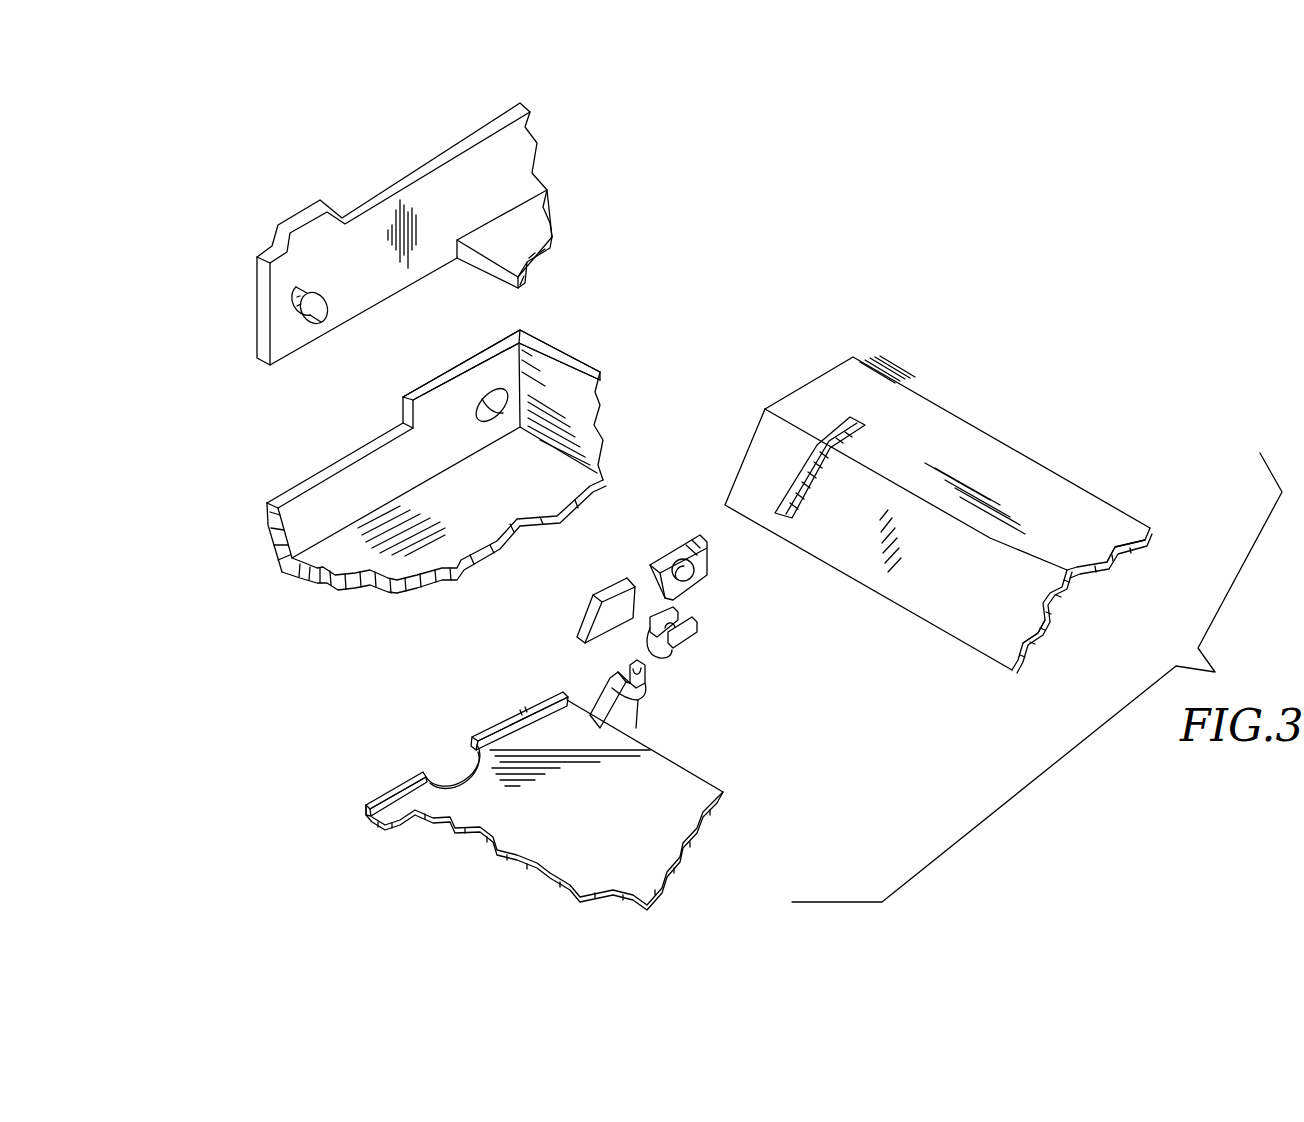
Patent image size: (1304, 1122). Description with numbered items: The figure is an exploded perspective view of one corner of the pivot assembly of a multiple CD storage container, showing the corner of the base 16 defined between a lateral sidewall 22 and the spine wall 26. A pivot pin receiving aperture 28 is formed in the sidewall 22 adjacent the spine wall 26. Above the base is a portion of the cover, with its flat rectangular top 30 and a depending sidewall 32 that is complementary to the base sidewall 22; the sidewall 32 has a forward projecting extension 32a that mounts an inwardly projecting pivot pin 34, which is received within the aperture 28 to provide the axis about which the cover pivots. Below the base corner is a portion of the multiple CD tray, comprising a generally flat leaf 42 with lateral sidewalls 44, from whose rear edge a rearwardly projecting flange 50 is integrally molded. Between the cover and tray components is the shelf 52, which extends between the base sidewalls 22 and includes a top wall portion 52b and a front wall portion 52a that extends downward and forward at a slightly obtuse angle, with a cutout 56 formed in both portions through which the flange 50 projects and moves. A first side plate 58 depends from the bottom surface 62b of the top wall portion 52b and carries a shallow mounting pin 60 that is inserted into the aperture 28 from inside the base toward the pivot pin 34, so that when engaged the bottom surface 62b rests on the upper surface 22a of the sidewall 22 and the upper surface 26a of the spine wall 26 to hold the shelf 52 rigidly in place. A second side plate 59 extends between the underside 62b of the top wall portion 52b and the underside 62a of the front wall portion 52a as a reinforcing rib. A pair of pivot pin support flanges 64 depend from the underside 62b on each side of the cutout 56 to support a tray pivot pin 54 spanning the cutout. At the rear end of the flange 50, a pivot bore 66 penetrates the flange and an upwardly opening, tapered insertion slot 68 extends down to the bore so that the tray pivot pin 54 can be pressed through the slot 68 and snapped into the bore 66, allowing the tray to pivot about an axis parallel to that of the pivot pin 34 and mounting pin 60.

The base 16 is at (322, 451).
The lateral sidewalls 22 is at (377, 470).
The upper surface of sidewalls 22a is at (490, 347).
The spine wall 26 is at (573, 417).
The upper surface of spine wall 26a is at (560, 354).
The pivot pin receiving apertures 28 is at (488, 397).
The flat rectangular top 30 is at (513, 237).
The cover sidewalls 32 is at (488, 150).
The forward projecting extensions 32a is at (417, 193).
The pivot pin 34 is at (322, 307).
The flat leaf 42 is at (585, 811).
The lateral sidewalls of leaf 44 is at (507, 717).
The rearwardly projecting flanges 50 is at (613, 708).
The shelf 52 is at (910, 393).
The front wall portion 52a is at (913, 600).
The top wall portion 52b is at (1010, 470).
The tray pivot pins 54 is at (677, 613).
The cutouts 56 is at (808, 472).
The first pair of side plates 58 is at (655, 565).
The second pair of side plates 59 is at (613, 608).
The mounting pin 60 is at (712, 564).
The underside of shelf front wall portion 62a is at (1048, 626).
The bottom surface of top wall portion 62b is at (1117, 558).
The pivot pin support flanges 64 is at (670, 656).
The pivot bore 66 is at (617, 701).
The insertion slot 68 is at (628, 667).